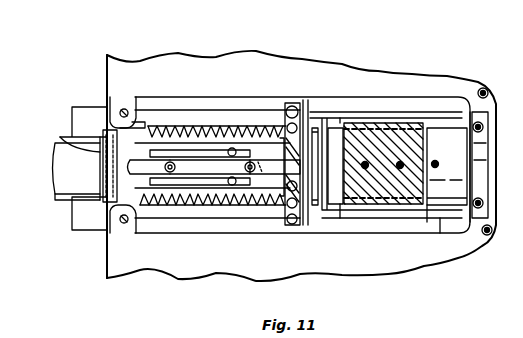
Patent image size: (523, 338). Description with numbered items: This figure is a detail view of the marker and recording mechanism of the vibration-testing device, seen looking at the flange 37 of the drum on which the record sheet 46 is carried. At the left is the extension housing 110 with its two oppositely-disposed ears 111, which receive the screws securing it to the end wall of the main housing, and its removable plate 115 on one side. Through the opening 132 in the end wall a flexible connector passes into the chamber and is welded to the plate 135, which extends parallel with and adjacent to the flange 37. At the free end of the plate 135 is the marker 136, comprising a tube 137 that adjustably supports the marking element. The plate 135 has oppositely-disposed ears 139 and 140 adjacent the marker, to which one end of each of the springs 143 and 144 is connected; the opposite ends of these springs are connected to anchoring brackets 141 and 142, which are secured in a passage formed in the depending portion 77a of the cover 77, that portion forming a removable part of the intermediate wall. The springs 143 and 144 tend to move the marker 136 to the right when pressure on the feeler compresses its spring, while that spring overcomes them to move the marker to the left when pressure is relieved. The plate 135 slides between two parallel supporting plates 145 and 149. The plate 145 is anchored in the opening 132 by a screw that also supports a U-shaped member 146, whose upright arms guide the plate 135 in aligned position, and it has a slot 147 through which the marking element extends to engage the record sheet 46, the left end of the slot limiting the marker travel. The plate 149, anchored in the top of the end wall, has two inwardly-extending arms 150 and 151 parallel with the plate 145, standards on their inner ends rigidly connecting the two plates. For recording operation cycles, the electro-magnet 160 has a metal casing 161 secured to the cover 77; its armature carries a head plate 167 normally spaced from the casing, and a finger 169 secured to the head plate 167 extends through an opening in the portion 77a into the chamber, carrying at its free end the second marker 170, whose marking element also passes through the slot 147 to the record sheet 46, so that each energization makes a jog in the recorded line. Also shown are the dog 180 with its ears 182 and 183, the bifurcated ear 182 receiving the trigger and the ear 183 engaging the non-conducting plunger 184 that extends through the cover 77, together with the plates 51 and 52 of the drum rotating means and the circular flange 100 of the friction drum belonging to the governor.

The flange 37 is at (277, 217).
The record sheet 46 is at (180, 218).
The plate 51 is at (430, 212).
The plate 52 is at (372, 222).
The cover 77 is at (302, 128).
The depending portion 77a is at (290, 166).
The circular flange 100 is at (345, 228).
The extension housing 110 is at (55, 150).
The ears 111 is at (72, 118).
The removable plate 115 is at (55, 193).
The opening 132 is at (97, 140).
The plate 135 is at (103, 165).
The marker 136 is at (167, 202).
The tube 137 is at (178, 150).
The ear 139 is at (150, 135).
The ear 140 is at (130, 226).
The anchoring bracket 141 is at (274, 137).
The anchoring bracket 142 is at (273, 200).
The spring 143 is at (220, 162).
The spring 144 is at (231, 210).
The supporting plate 145 is at (72, 137).
The U-shaped member 146 is at (103, 185).
The slot 147 is at (253, 152).
The supporting plate 149 is at (128, 150).
The arm 150 is at (190, 152).
The arm 151 is at (184, 212).
The electro-magnet 160 is at (458, 152).
The metal casing 161 is at (340, 104).
The head plate 167 is at (333, 112).
The finger 169 is at (302, 198).
The marker 170 is at (250, 203).
The dog 180 is at (467, 147).
The ear 182 is at (486, 233).
The ear 183 is at (470, 125).
The plunger 184 is at (472, 137).